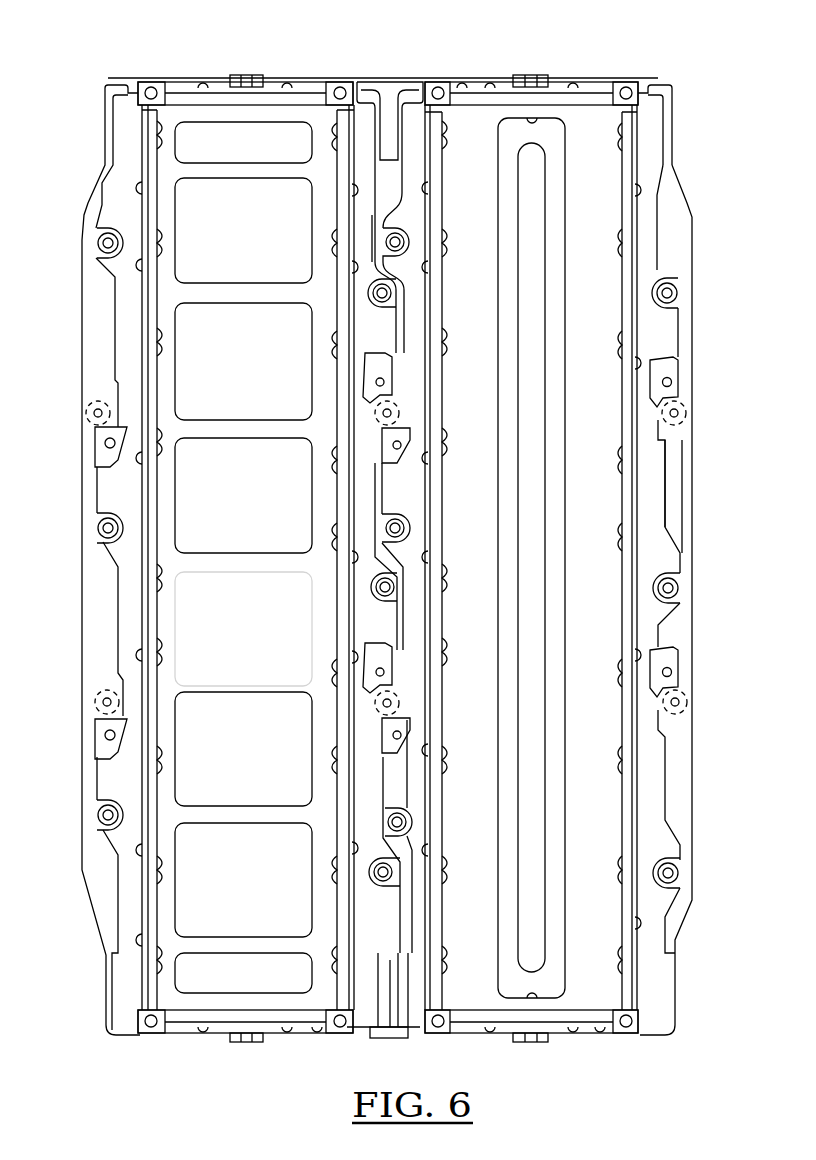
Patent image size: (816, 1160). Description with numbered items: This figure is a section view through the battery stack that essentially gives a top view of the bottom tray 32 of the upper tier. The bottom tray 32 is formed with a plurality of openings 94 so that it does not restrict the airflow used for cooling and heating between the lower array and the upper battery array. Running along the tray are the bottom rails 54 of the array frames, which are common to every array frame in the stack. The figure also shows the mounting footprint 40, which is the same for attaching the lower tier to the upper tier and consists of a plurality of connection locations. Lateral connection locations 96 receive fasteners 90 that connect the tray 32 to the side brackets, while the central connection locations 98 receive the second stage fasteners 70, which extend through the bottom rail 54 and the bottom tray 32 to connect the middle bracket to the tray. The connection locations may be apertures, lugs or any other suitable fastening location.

The bottom tray 32 is at (683, 194).
The mounting footprint 40 is at (672, 477).
The bottom rail 54 is at (368, 122).
The second stage fastener 70 is at (408, 402).
The fastener 90 is at (80, 422).
The opening 94 is at (182, 218).
The lateral connection location 96 is at (97, 407).
The central connection location 98 is at (390, 413).